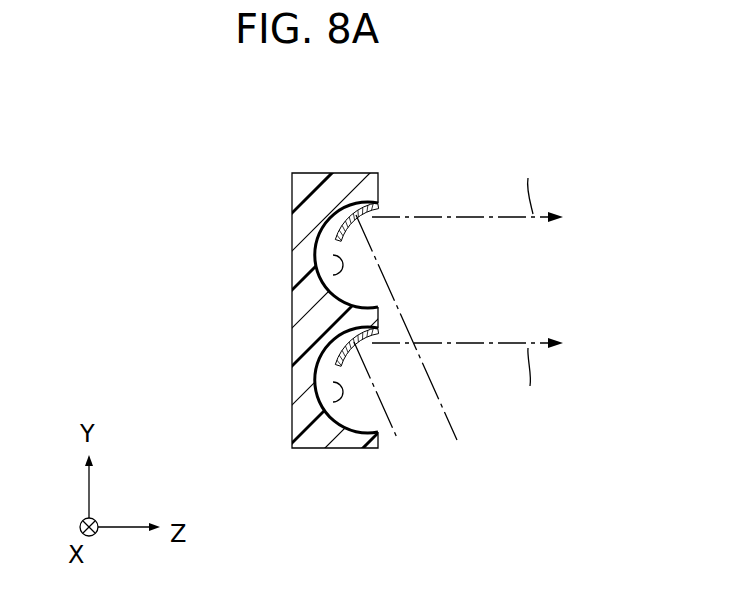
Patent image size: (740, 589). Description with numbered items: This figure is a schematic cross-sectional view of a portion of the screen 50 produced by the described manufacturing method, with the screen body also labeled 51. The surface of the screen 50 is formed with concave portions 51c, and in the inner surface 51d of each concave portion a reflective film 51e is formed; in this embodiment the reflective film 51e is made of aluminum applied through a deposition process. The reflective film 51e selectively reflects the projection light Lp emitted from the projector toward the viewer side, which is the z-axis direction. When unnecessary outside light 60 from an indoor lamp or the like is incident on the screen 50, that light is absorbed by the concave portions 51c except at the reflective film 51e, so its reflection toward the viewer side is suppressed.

The screen 50 is at (456, 316).
The lens 51 is at (306, 172).
The concave portions 51c is at (333, 268).
The inner surface 51d is at (337, 395).
The reflective film 51e is at (372, 208).
The outside light 60 is at (450, 153).